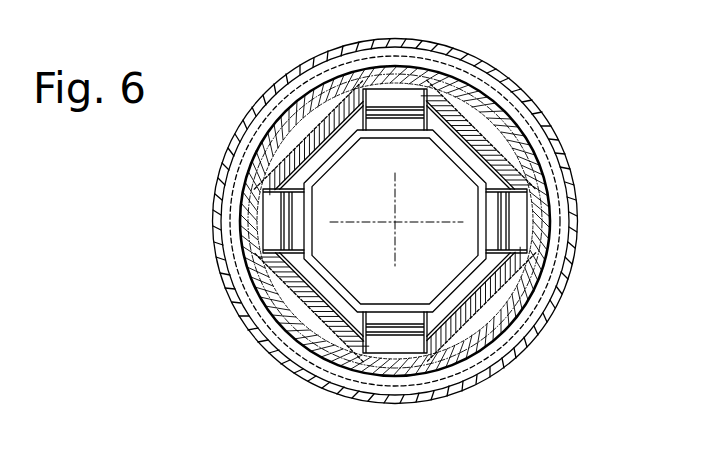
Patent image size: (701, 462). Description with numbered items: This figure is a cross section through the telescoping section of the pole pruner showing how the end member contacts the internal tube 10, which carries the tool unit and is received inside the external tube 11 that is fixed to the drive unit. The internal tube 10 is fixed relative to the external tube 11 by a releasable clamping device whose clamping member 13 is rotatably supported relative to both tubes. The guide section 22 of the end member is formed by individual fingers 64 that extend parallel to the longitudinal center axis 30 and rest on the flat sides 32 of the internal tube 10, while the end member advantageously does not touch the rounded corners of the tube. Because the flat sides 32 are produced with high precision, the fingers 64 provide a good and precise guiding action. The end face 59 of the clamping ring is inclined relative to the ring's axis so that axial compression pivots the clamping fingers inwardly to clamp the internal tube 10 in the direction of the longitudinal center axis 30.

The internal tube 10 is at (393, 127).
The external tube 11 is at (283, 213).
The clamping member 13 is at (523, 110).
The guide section 22 is at (473, 277).
The longitudinal center axis 30 is at (395, 222).
The flat sides 32 is at (448, 285).
The end face 59 is at (565, 155).
The fingers 64 is at (463, 123).